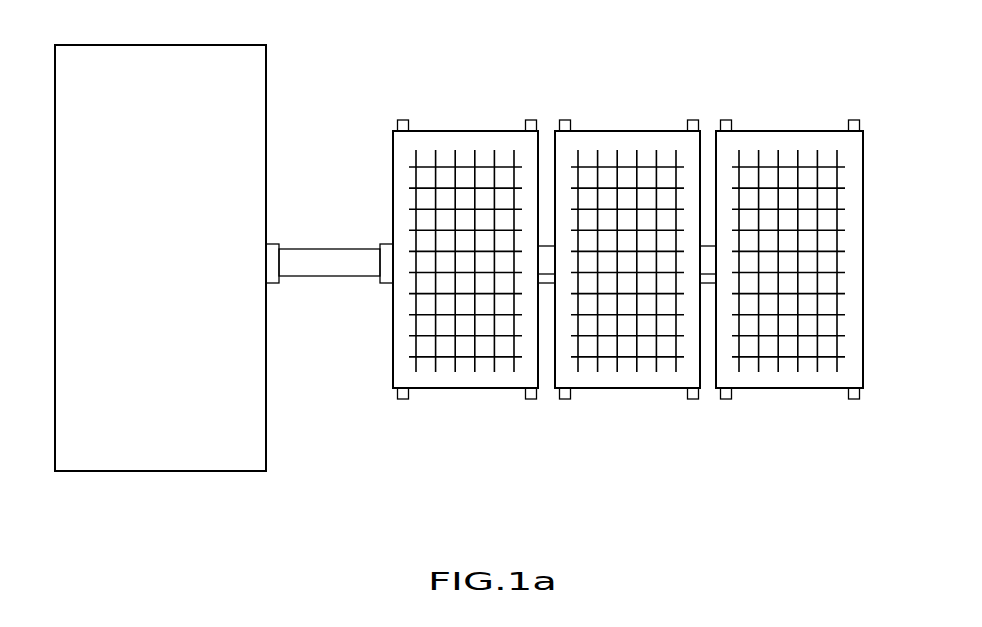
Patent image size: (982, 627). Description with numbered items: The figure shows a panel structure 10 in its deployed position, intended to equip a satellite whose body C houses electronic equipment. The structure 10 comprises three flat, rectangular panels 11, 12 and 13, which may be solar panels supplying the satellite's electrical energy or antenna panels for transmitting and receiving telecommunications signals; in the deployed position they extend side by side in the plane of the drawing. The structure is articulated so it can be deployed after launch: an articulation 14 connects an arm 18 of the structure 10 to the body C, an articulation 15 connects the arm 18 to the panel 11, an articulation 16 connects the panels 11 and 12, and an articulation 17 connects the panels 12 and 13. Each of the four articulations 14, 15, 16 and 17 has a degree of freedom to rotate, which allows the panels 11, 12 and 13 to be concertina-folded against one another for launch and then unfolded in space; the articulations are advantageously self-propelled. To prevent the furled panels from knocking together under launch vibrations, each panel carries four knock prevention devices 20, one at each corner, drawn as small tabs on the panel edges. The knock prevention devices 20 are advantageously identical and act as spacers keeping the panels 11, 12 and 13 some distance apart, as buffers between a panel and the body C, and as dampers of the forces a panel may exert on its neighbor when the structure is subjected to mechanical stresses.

The structure 10 is at (628, 284).
The panel 11 is at (462, 131).
The panel 12 is at (624, 131).
The panel 13 is at (785, 131).
The articulation 14 is at (272, 272).
The articulation 15 is at (387, 273).
The articulation 16 is at (546, 247).
The articulation 17 is at (710, 247).
The arm 18 is at (328, 248).
The knock prevention device 20 is at (403, 120).
The body C is at (175, 262).